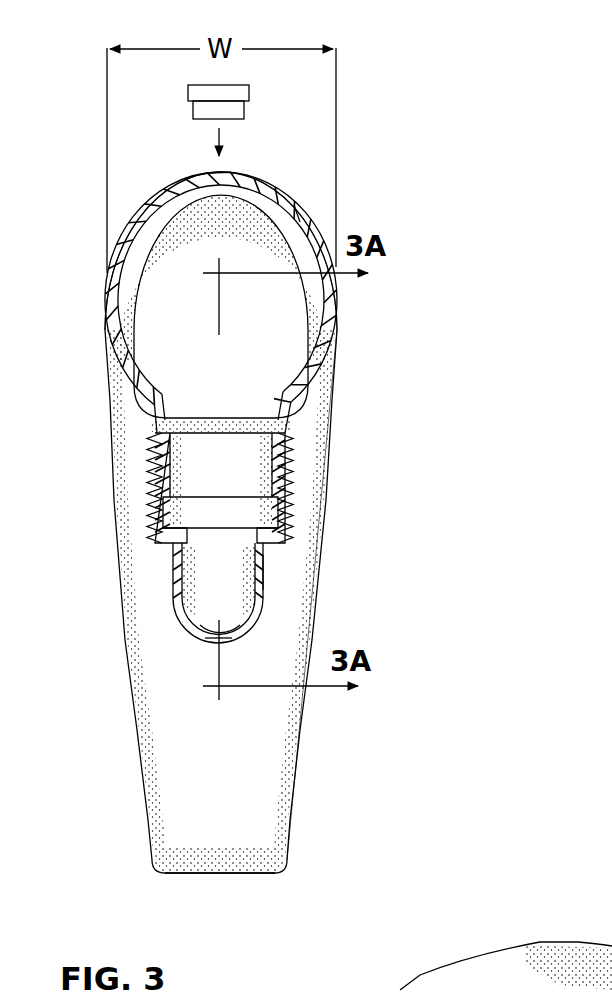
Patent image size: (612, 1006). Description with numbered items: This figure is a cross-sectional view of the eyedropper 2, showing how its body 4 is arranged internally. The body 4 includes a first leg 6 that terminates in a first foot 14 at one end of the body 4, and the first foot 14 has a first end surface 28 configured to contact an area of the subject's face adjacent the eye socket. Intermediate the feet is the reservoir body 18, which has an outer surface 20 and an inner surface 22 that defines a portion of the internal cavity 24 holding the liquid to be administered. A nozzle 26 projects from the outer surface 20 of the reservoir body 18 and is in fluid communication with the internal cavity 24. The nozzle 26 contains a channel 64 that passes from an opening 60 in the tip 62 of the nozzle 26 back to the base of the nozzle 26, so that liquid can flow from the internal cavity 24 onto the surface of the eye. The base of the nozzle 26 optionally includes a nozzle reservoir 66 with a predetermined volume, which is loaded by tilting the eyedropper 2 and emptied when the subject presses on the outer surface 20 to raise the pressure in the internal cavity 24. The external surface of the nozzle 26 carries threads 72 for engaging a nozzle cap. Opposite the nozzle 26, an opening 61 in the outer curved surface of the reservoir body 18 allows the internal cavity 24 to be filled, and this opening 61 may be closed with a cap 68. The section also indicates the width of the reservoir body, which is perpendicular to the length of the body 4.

The eyedropper 2 is at (70, 142).
The body 4 is at (117, 243).
The first leg 6 is at (330, 870).
The first foot 14 is at (188, 874).
The reservoir body 18 is at (332, 455).
The outer surface 20 is at (290, 191).
The inner surface 22 is at (278, 214).
The internal cavity 24 is at (221, 313).
The nozzle 26 is at (270, 567).
The first end surface 28 is at (240, 874).
The opening 60 is at (219, 645).
The opening 61 is at (219, 186).
The tip 62 is at (173, 581).
The channel 64 is at (222, 578).
The nozzle reservoir 66 is at (220, 488).
The cap 68 is at (188, 93).
The threads 72 is at (150, 484).